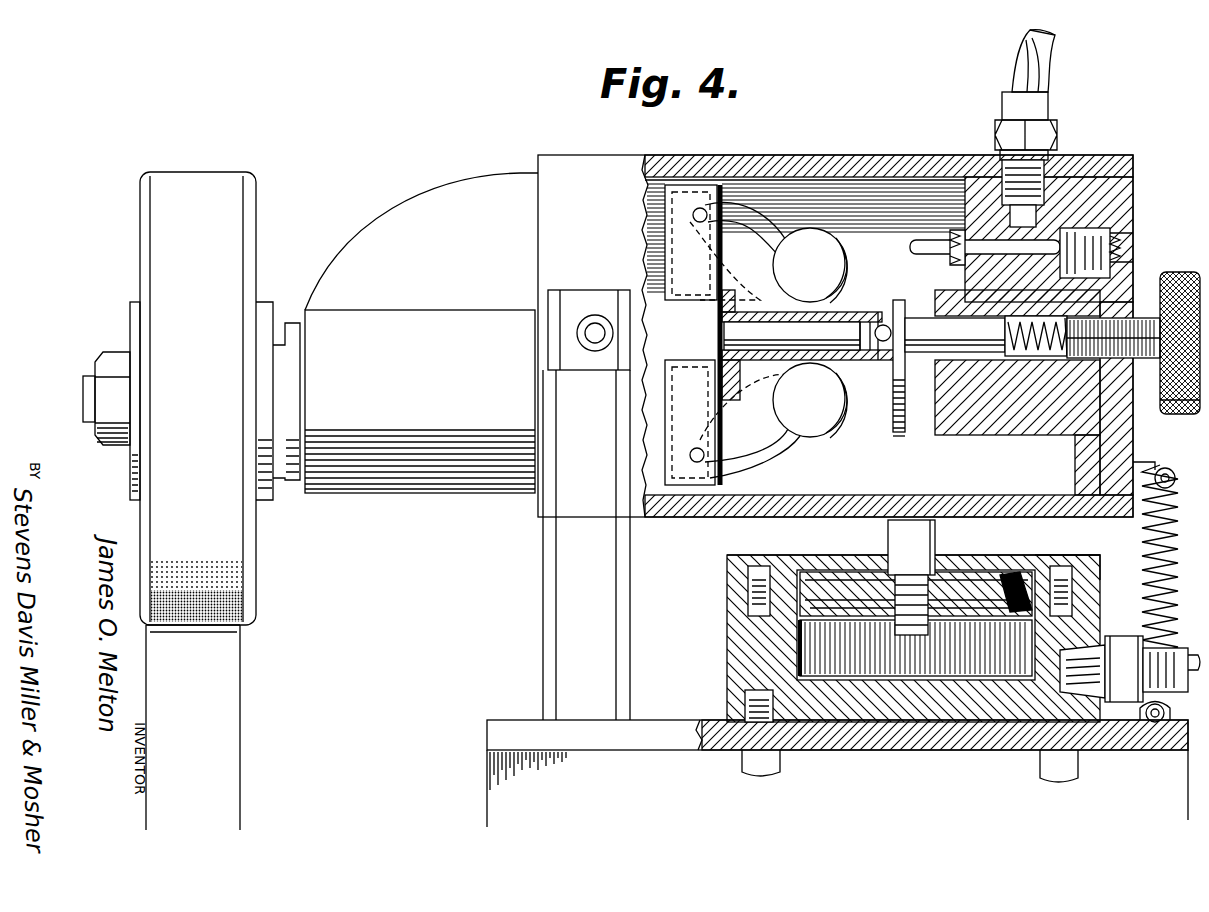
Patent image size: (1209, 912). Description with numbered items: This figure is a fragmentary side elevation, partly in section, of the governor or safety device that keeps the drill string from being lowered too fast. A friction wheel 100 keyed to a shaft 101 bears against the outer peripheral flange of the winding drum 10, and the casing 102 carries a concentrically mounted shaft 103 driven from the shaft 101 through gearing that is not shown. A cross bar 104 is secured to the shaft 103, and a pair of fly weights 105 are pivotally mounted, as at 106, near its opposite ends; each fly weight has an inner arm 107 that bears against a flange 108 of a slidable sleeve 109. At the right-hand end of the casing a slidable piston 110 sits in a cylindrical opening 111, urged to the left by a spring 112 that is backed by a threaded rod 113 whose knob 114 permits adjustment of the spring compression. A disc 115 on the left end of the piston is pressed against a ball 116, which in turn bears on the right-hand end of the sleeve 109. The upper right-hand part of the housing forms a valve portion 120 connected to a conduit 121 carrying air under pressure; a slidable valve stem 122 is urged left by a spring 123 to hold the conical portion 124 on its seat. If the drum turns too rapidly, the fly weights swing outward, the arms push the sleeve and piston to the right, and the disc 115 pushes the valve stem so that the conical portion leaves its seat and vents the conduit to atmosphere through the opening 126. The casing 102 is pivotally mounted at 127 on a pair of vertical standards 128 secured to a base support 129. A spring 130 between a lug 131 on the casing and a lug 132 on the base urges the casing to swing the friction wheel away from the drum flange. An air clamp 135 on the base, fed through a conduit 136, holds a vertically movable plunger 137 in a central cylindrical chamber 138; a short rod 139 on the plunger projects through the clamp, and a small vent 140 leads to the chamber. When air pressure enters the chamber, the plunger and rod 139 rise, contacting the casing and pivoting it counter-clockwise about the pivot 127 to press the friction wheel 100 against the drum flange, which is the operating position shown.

The winding drum 10 is at (242, 692).
The friction wheel 100 is at (193, 182).
The shaft 101 is at (83, 398).
The casing 102 is at (447, 196).
The shaft 103 is at (760, 352).
The cross bar 104 is at (683, 182).
The fly weights 105 is at (810, 333).
The pivot 106 is at (700, 210).
The inner arm 107 is at (680, 262).
The flange 108 is at (722, 300).
The slidable sleeve 109 is at (880, 360).
The slidable piston 110 is at (922, 355).
The cylindrical opening 111 is at (1025, 358).
The spring 112 is at (1058, 360).
The threaded rod 113 is at (1130, 360).
The knob 114 is at (1180, 415).
The disc 115 is at (893, 418).
The ball 116 is at (893, 334).
The valve portion 120 is at (1125, 195).
The conduit 121 is at (1010, 60).
The slidable valve stem 122 is at (938, 250).
The spring 123 is at (1125, 256).
The conical portion 124 is at (1048, 175).
The opening 126 is at (1112, 242).
The pivot 127 is at (577, 333).
The vertical standards 128 is at (568, 608).
The base support 129 is at (660, 728).
The spring 130 is at (1140, 548).
The lug 131 is at (1172, 470).
The lug 132 is at (1145, 720).
The air clamp 135 is at (730, 604).
The conduit 136 is at (1178, 700).
The plunger 137 is at (990, 612).
The central cylindrical chamber 138 is at (885, 680).
The short rod 139 is at (890, 540).
The vent 140 is at (988, 568).